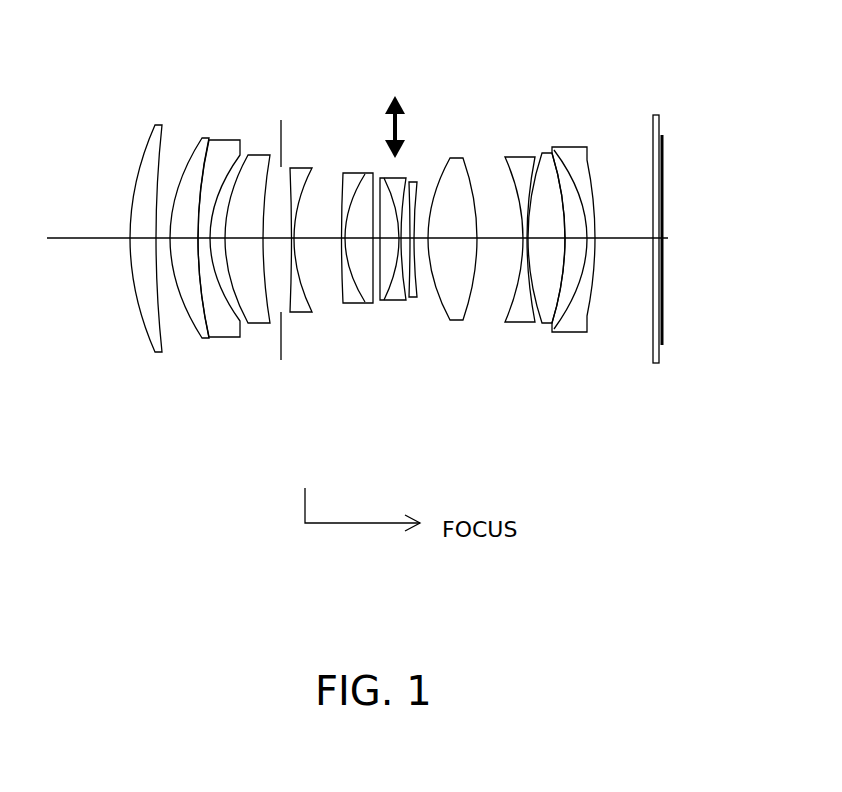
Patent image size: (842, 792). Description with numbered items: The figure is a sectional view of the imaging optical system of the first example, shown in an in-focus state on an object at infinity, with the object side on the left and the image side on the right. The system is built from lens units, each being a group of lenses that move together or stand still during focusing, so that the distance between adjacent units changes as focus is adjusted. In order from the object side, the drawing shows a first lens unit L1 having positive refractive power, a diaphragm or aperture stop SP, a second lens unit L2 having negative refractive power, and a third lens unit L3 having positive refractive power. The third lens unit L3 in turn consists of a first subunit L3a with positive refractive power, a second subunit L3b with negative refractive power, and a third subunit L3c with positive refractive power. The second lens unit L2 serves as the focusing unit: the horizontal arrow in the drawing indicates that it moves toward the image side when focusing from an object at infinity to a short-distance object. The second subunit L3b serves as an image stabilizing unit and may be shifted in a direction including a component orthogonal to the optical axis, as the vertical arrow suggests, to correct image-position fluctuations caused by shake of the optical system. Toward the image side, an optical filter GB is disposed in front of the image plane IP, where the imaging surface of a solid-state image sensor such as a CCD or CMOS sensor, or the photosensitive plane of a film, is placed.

The first lens unit L1 is at (273, 417).
The second lens unit L2 is at (325, 417).
The third lens unit L3 is at (469, 282).
The first subunit L3a is at (377, 337).
The second subunit L3b is at (420, 337).
The third subunit L3c is at (600, 337).
The diaphragm SP is at (281, 120).
The optical filter GB is at (667, 417).
The image plane IP is at (665, 133).